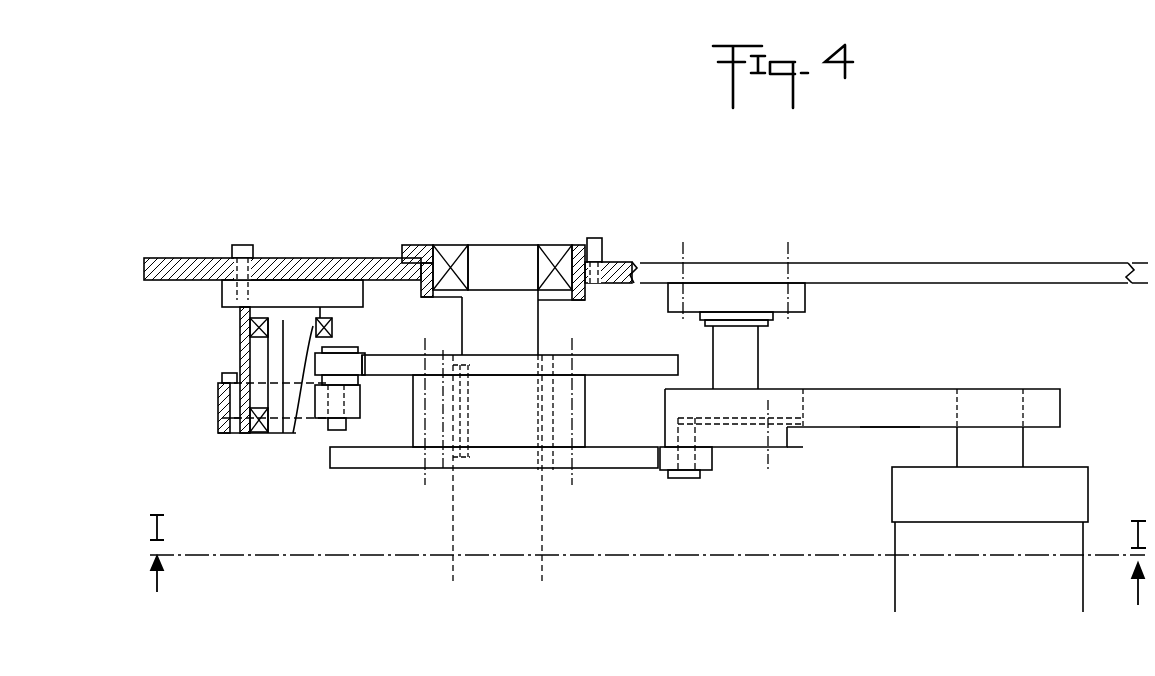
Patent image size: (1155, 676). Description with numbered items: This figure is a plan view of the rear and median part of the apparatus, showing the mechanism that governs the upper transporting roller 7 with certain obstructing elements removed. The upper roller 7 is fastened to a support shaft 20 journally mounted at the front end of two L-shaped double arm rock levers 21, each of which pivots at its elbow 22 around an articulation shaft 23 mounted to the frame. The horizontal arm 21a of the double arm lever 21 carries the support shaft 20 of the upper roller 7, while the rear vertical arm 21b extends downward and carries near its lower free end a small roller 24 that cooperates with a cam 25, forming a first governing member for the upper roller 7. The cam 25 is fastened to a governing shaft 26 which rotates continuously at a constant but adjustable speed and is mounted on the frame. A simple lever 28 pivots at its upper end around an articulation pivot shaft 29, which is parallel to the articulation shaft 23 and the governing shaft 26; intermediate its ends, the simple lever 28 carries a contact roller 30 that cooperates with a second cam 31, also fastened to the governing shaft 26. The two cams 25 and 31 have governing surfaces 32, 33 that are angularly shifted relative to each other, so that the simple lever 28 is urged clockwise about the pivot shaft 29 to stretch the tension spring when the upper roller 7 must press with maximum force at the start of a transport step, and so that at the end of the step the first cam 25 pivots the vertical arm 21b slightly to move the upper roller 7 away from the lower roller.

The upper transporting roller 7 is at (910, 580).
The support shaft 20 is at (1020, 445).
The double arm rock lever 21 is at (877, 387).
The horizontal arm 21a is at (888, 410).
The rear vertical arm 21b is at (782, 440).
The elbow 22 is at (665, 410).
The articulation shaft 23 is at (748, 362).
The small disc or roller 24 is at (708, 464).
The cam 25 is at (630, 458).
The governing shaft 26 is at (522, 323).
The simple lever 28 is at (310, 420).
The articulation pivot shaft 29 is at (280, 352).
The contact roller 30 is at (356, 364).
The second cam 31 is at (390, 368).
The governing surface 32 is at (385, 458).
The governing surface 33 is at (621, 370).